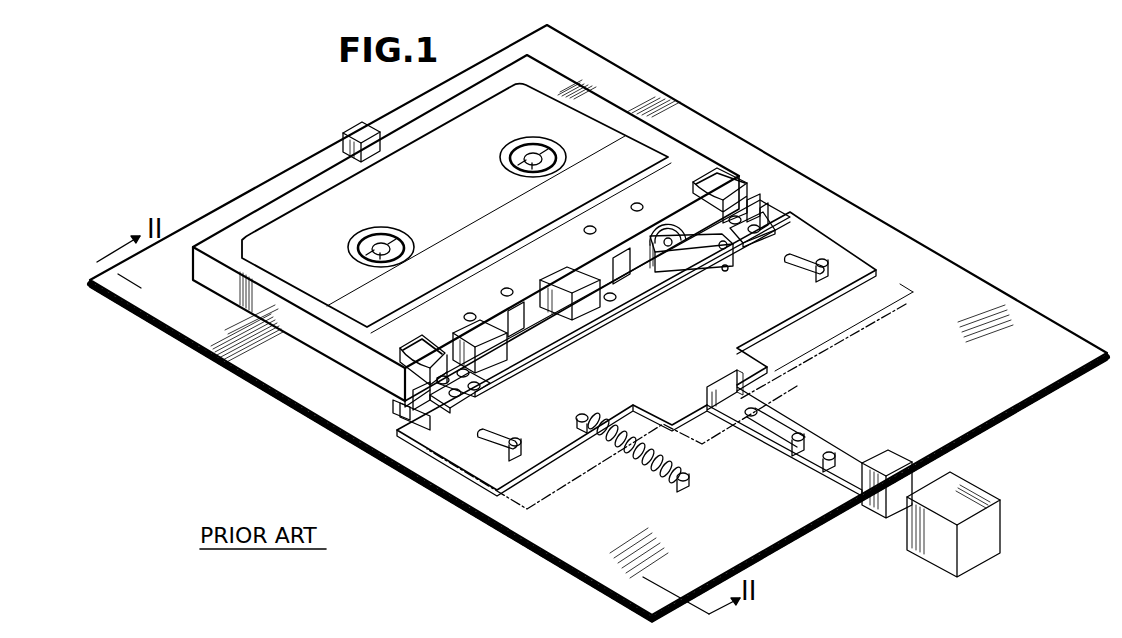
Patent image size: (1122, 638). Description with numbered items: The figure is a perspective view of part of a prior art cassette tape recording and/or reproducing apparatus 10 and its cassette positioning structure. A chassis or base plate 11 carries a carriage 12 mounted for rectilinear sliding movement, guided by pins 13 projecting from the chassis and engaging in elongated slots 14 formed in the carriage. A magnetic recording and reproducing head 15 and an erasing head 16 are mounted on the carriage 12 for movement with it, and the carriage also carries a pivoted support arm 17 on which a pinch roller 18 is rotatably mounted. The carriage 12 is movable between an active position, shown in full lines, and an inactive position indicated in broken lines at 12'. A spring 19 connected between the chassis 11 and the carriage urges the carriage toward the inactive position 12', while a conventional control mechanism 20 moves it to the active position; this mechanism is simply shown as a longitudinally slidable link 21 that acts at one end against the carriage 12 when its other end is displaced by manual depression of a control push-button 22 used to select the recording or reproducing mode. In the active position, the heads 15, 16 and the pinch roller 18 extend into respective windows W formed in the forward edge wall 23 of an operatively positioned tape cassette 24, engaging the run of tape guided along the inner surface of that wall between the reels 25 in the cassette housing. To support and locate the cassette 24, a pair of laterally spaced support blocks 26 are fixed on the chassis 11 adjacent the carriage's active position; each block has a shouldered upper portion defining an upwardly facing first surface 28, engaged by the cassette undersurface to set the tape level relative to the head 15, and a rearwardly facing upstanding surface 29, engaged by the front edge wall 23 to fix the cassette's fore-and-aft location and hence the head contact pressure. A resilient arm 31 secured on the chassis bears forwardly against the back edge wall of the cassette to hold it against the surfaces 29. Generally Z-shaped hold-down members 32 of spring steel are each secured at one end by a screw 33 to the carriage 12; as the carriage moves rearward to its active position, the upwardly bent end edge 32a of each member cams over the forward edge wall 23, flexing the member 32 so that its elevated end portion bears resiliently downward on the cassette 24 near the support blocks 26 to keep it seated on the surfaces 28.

The cassette tape recording and/or reproducing apparatus 10 is at (743, 132).
The chassis or base plate 11 is at (565, 542).
The carriage 12 is at (636, 354).
The inactive position of carriage 12' is at (679, 396).
The pins 13 is at (512, 452).
The elongated slots 14 is at (486, 439).
The magnetic recording and reproducing head 15 is at (592, 312).
The erasing head 16 is at (497, 363).
The pivoted support arm 17 is at (666, 262).
The pinch roller 18 is at (646, 233).
The spring 19 is at (628, 458).
The control mechanism 20 is at (866, 507).
The link 21 is at (825, 465).
The control push-button 22 is at (972, 484).
The forward edge wall 23 is at (624, 272).
The tape cassette 24 is at (612, 100).
The reels 25 is at (379, 240).
The support blocks 26 is at (400, 410).
The first surface 28 is at (400, 398).
The upstanding surface 29 is at (410, 387).
The resilient arm 31 is at (360, 130).
The hold-down members 32 is at (404, 345).
The upwardly bent end edge 32a is at (412, 335).
The screw 33 is at (441, 407).
The windows W is at (501, 296).